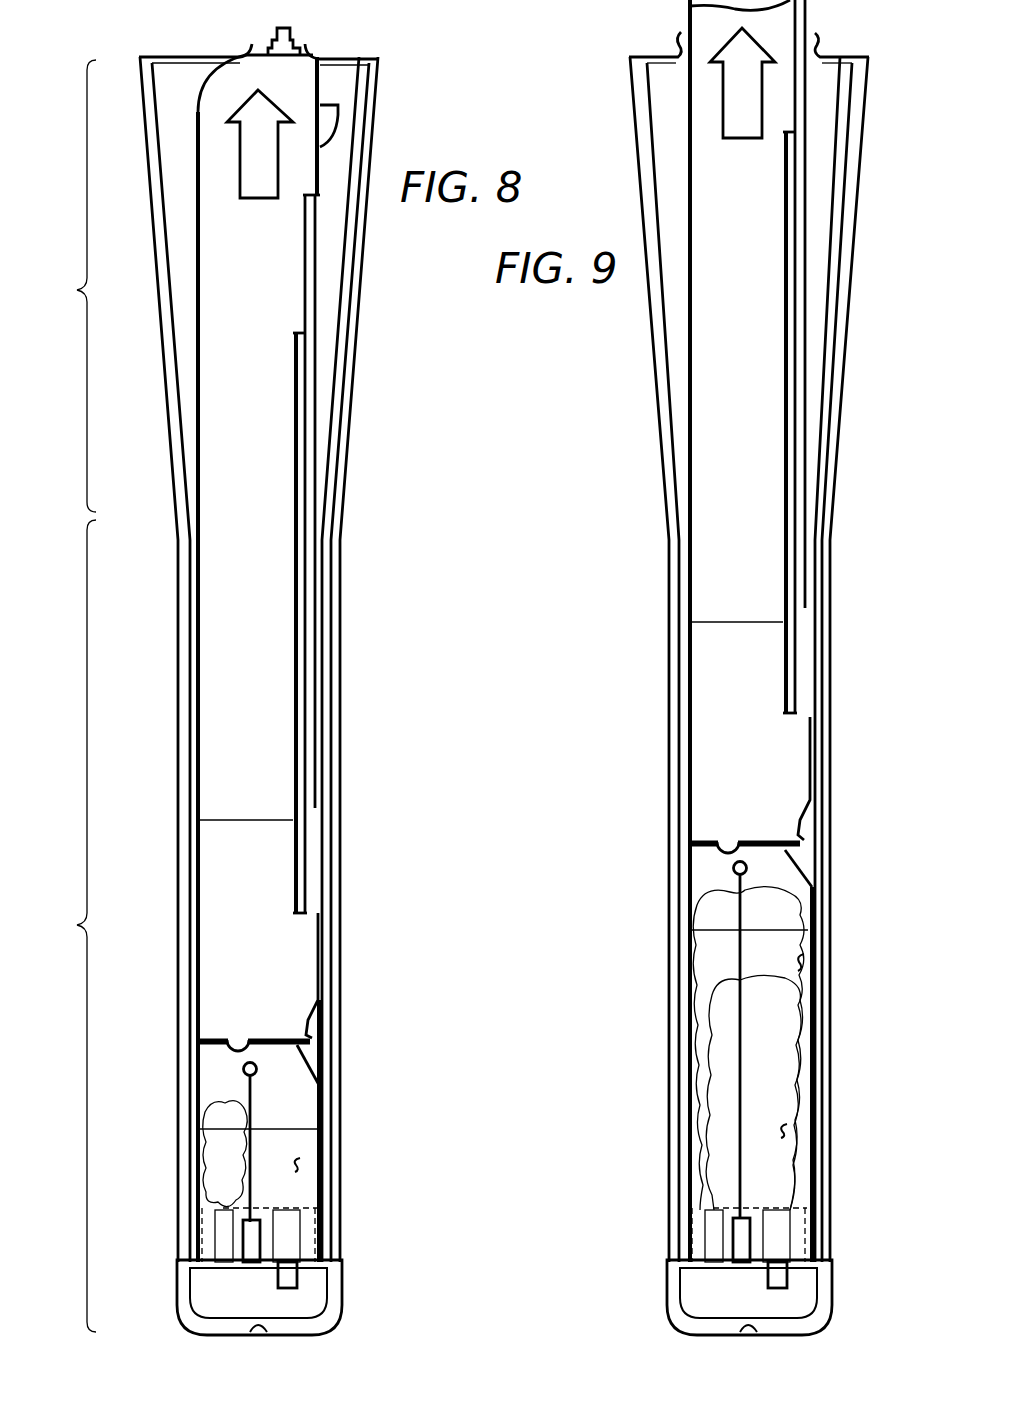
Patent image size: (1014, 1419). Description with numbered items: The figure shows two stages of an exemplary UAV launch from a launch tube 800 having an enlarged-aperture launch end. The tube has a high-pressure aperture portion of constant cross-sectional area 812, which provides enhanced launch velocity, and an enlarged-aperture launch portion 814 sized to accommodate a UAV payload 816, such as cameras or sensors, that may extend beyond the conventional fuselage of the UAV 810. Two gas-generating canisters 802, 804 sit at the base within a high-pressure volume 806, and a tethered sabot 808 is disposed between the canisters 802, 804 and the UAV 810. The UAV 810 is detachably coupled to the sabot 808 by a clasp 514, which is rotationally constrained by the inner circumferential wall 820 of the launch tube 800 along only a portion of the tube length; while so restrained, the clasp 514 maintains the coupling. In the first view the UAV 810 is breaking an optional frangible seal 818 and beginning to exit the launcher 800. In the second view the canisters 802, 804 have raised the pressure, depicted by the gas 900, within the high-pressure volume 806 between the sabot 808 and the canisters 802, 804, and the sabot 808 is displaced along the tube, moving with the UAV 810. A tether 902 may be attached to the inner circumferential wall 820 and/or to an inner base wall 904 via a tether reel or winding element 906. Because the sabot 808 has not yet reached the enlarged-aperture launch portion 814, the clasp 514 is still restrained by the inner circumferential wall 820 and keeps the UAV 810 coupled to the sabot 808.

In FIG. 8, the launch tube 800 is at (358, 352).
In FIG. 9, the launch tube 800 is at (659, 415).
In FIG. 8, the UAV 810 is at (265, 512).
In FIG. 9, the UAV 810 is at (742, 568).
In FIG. 8, the high-pressure aperture portion of constant cross-sectional area 812 is at (75, 924).
In FIG. 8, the enlarged-aperture launch portion 814 is at (75, 289).
In FIG. 8, the UAV payload 816 is at (328, 122).
In FIG. 8, the frangible seal 818 is at (207, 55).
In FIG. 8, the inner circumferential wall 820 is at (316, 992).
In FIG. 9, the inner circumferential wall 820 is at (810, 935).
In FIG. 8, the clasp 514 is at (315, 1055).
In FIG. 9, the clasp 514 is at (805, 840).
In FIG. 8, the tethered sabot 808 is at (213, 1070).
In FIG. 9, the tethered sabot 808 is at (705, 868).
In FIG. 8, the high-pressure volume 806 is at (300, 1165).
In FIG. 9, the high-pressure volume 806 is at (803, 962).
In FIG. 8, the gas-generating canister 802 is at (225, 1225).
In FIG. 9, the gas-generating canister 802 is at (715, 1225).
In FIG. 8, the gas-generating canister 804 is at (293, 1228).
In FIG. 9, the gas-generating canister 804 is at (782, 1228).
In FIG. 9, the gas 900 is at (786, 1130).
In FIG. 9, the tether 902 is at (740, 1045).
In FIG. 9, the inner base wall 904 is at (730, 1270).
In FIG. 9, the tether reel or winding element 906 is at (735, 1258).